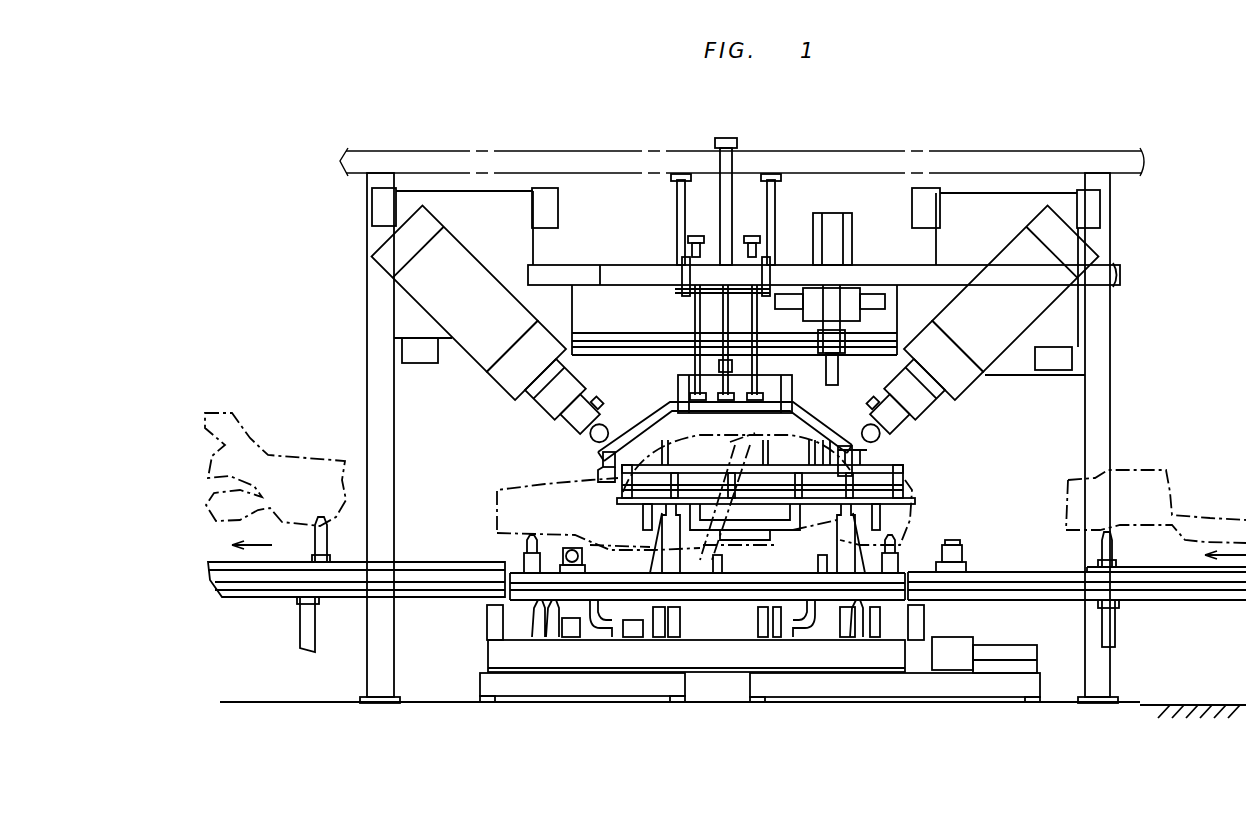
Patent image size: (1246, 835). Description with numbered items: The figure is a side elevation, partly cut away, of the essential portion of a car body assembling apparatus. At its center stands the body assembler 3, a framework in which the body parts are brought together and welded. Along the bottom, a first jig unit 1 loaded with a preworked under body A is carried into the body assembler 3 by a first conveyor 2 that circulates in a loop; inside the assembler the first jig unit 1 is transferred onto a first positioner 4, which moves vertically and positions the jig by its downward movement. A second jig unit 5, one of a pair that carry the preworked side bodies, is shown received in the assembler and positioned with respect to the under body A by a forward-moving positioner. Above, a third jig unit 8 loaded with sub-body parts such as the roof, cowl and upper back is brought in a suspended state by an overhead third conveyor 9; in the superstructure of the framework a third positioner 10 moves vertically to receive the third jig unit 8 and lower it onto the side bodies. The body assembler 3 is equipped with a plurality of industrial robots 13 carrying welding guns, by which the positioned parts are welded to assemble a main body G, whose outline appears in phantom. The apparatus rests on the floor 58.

The first jig unit 1 is at (325, 562).
The first conveyor 2 is at (424, 598).
The body assembler 3 is at (905, 152).
The first positioner 4 is at (725, 673).
The second jig unit 5 is at (905, 483).
The third jig unit 8 is at (650, 404).
The third conveyor 9 is at (776, 216).
The third positioner 10 is at (727, 234).
The industrial robot 13 is at (852, 250).
The floor 58 is at (1190, 705).
The main body G is at (262, 442).
The under body A is at (1182, 506).